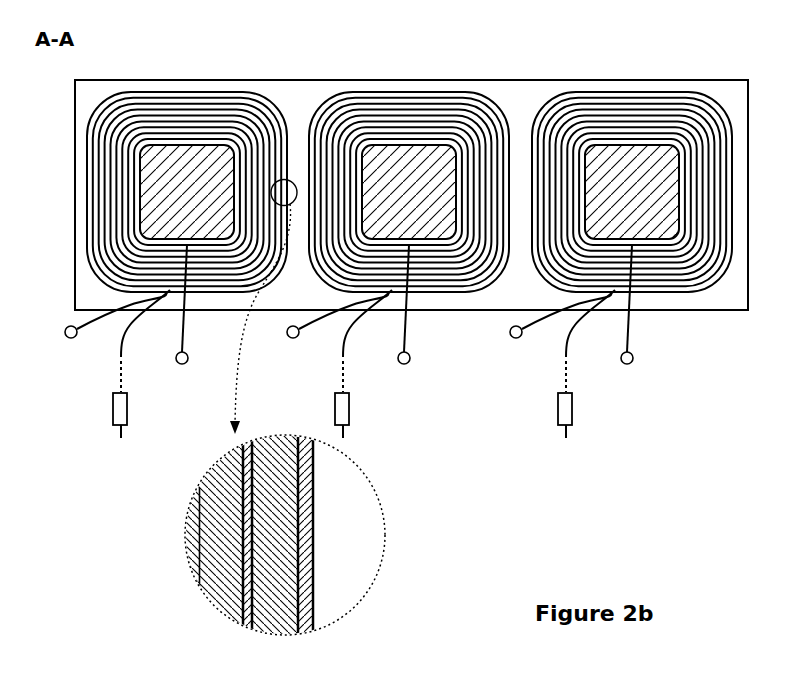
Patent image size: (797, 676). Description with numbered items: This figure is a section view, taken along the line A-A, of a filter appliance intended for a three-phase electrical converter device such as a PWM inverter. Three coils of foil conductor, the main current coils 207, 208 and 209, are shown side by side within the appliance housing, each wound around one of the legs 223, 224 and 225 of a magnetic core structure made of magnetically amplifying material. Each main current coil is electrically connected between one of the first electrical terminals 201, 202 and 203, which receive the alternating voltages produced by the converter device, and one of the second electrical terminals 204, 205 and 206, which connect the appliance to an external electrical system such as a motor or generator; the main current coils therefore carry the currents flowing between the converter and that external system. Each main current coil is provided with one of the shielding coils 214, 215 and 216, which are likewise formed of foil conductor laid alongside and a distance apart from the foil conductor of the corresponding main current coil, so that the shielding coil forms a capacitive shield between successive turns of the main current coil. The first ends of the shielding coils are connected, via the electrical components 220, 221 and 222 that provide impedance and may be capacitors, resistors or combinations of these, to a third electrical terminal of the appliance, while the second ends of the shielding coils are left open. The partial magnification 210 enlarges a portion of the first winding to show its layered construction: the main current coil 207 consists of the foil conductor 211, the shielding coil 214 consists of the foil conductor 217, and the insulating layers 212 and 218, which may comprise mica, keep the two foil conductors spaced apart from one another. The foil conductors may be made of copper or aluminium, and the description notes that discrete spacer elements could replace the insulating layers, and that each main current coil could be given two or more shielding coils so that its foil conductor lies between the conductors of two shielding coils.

The first electrical terminal 201 is at (68, 338).
The first electrical terminal 202 is at (290, 338).
The first electrical terminal 203 is at (513, 338).
The second electrical terminal 204 is at (181, 364).
The second electrical terminal 205 is at (403, 364).
The second electrical terminal 206 is at (626, 364).
The main current coil 207 is at (260, 108).
The main current coil 208 is at (482, 108).
The main current coil 209 is at (705, 108).
The partial magnification 210 is at (385, 540).
The foil conductor 211 is at (305, 473).
The insulating layer 212 is at (277, 622).
The shielding coil 214 is at (130, 95).
The shielding coil 215 is at (349, 95).
The shielding coil 216 is at (570, 95).
The foil conductor 217 is at (247, 622).
The insulating layer 218 is at (217, 478).
The electrical component 220 is at (113, 406).
The electrical component 221 is at (350, 403).
The electrical component 222 is at (572, 407).
The leg 223 is at (187, 192).
The leg 224 is at (409, 192).
The leg 225 is at (632, 192).